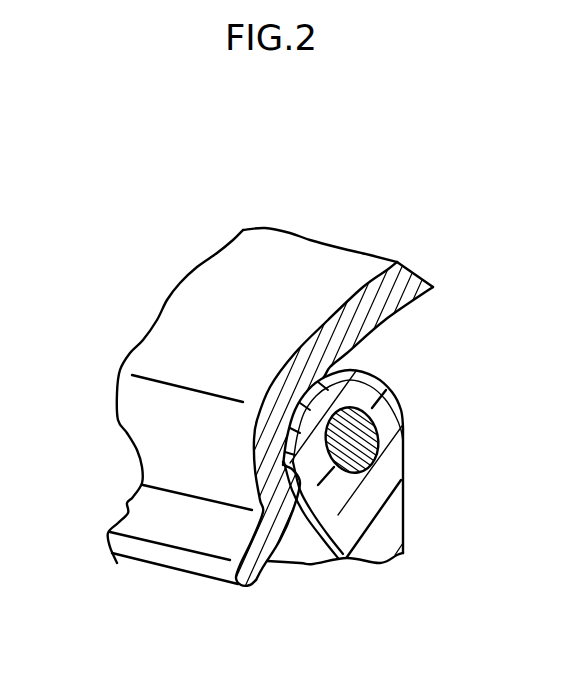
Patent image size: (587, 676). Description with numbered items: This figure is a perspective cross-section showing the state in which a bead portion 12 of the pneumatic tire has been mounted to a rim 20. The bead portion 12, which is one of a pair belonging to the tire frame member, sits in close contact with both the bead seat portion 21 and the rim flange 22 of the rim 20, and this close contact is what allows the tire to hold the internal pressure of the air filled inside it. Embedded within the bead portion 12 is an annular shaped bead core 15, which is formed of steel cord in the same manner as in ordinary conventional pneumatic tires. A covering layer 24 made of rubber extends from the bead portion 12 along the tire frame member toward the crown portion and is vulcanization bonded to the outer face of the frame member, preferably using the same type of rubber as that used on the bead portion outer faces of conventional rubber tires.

The bead portion 12 is at (403, 508).
The bead core 15 is at (363, 437).
The rim 20 is at (313, 180).
The bead seat portion 21 is at (370, 315).
The rim flange 22 is at (160, 433).
The covering layer 24 is at (310, 538).